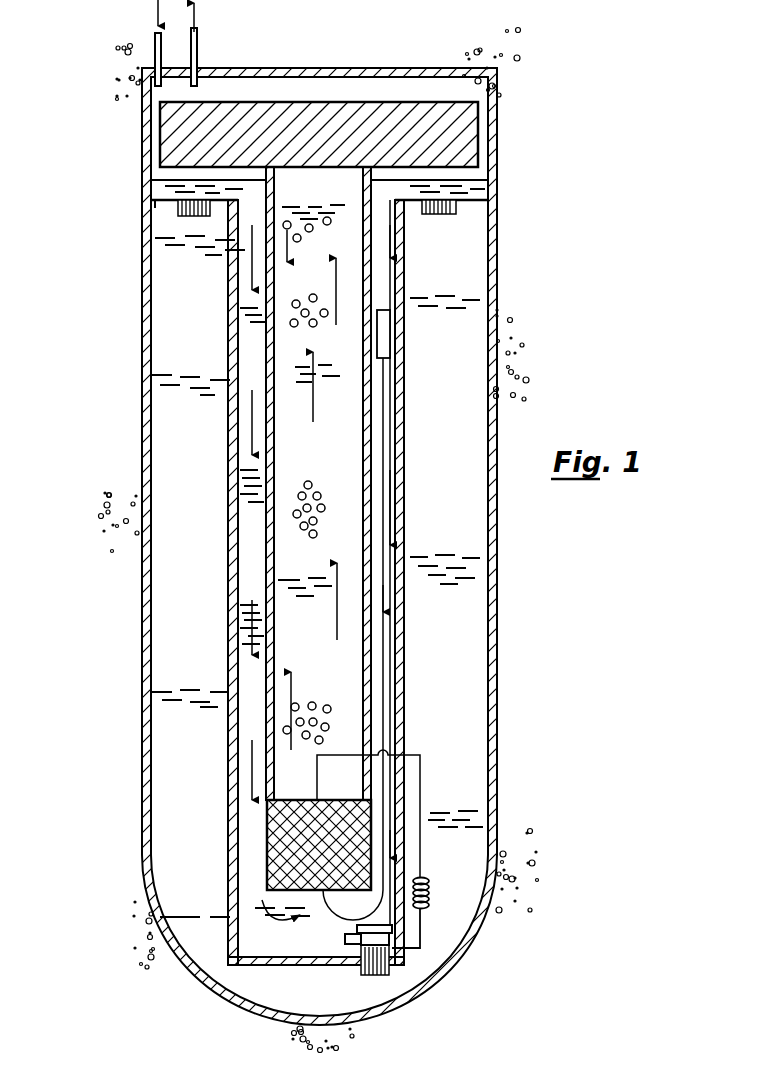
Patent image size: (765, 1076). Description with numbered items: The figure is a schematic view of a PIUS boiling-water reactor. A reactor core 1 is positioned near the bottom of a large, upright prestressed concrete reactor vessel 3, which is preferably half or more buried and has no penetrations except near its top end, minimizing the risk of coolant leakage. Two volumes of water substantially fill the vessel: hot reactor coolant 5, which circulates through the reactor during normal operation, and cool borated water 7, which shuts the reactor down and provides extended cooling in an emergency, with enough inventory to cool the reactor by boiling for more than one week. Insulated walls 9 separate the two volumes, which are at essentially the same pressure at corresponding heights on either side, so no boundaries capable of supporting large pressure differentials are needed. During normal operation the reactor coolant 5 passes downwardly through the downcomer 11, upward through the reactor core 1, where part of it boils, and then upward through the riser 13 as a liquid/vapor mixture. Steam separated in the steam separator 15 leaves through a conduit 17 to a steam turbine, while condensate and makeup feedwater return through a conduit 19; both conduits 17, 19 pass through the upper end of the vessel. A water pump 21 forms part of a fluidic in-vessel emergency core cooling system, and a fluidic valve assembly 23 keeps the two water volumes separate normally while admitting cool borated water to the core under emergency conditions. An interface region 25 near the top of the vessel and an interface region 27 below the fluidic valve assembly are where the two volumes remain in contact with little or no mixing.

The reactor core 1 is at (265, 820).
The prestressed concrete reactor vessel 3 is at (118, 503).
The hot reactor coolant 5 is at (300, 640).
The cool borated water 7 is at (178, 320).
The insulated walls 9 is at (475, 203).
The downcomer 11 is at (245, 483).
The riser 13 is at (348, 442).
The steam separator 15 is at (195, 145).
The conduit 17 is at (198, 42).
The conduit 19 is at (155, 47).
The water pump 21 is at (386, 330).
The fluidic valve assembly 23 is at (398, 950).
The interface region 25 is at (190, 215).
The interface region 27 is at (395, 968).